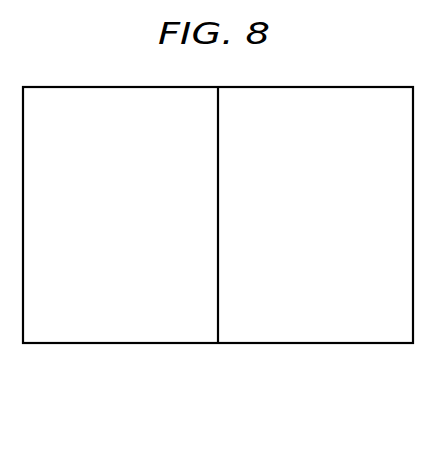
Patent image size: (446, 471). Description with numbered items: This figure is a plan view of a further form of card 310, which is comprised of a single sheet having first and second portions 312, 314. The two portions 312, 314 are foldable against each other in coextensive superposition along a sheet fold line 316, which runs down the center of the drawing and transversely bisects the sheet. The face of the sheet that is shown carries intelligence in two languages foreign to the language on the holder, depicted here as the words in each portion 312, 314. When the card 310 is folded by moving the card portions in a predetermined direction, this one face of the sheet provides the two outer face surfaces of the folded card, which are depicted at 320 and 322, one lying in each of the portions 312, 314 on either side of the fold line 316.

The card 310 is at (275, 349).
The first portion 312 is at (152, 328).
The second portion 314 is at (363, 322).
The sheet fold line 316 is at (216, 320).
The outer face surface 320 is at (385, 219).
The outer face surface 322 is at (84, 238).